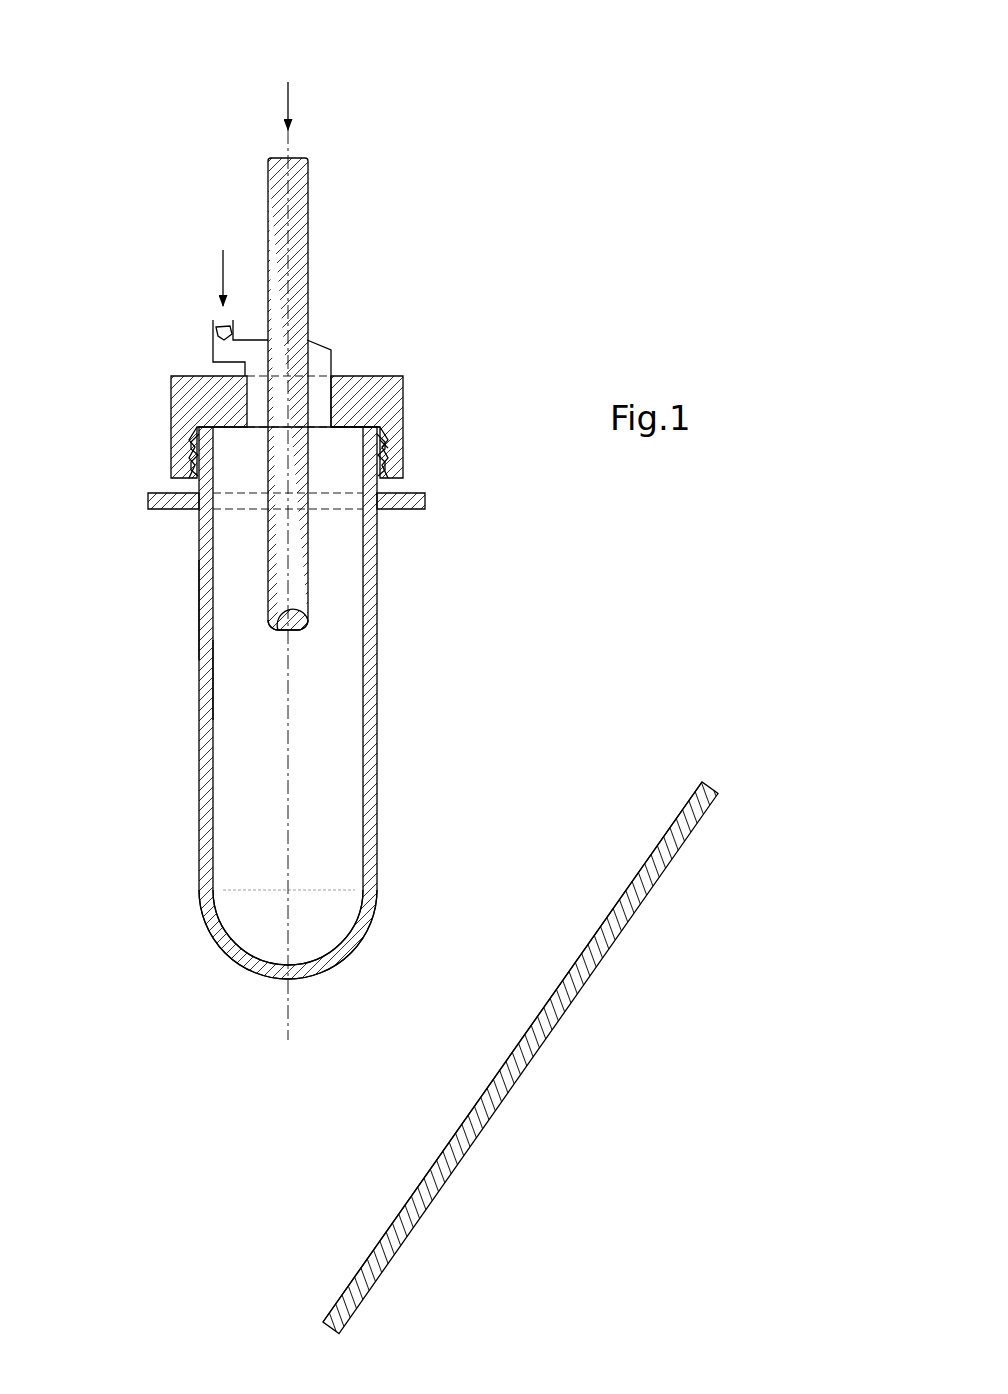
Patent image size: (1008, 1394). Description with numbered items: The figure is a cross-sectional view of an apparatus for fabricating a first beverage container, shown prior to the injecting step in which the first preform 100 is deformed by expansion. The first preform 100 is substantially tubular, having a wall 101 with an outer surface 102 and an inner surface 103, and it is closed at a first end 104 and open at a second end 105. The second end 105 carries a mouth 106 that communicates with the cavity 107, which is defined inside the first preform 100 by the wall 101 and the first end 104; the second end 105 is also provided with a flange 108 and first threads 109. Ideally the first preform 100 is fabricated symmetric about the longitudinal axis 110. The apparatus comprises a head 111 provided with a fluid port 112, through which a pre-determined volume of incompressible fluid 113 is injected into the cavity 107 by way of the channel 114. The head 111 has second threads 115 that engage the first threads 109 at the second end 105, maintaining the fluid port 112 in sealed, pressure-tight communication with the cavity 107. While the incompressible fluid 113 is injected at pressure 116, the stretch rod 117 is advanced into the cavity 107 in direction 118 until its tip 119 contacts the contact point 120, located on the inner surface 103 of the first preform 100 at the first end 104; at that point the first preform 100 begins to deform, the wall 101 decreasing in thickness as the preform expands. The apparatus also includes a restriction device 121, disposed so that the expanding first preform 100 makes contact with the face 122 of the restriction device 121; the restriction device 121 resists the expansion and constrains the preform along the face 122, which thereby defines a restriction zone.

The first preform 100 is at (398, 768).
The wall 101 is at (203, 566).
The outer surface 102 is at (203, 615).
The inner surface 103 is at (221, 673).
The first end 104 is at (233, 962).
The second end 105 is at (369, 417).
The mouth 106 is at (318, 417).
The cavity 107 is at (238, 768).
The flange 108 is at (402, 514).
The first threads 109 is at (386, 437).
The longitudinal axis 110 is at (287, 1023).
The head 111 is at (197, 373).
The fluid port 112 is at (329, 392).
The incompressible fluid 113 is at (218, 316).
The channel 114 is at (319, 344).
The second threads 115 is at (388, 452).
The pressure 116 is at (222, 273).
The stretch rod 117 is at (309, 233).
The direction 118 is at (291, 102).
The tip 119 is at (302, 635).
The contact point 120 is at (302, 958).
The restriction device 121 is at (581, 988).
The face 122 is at (531, 1014).